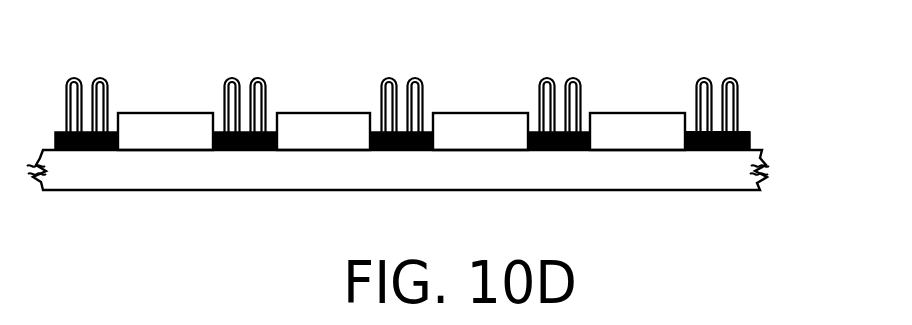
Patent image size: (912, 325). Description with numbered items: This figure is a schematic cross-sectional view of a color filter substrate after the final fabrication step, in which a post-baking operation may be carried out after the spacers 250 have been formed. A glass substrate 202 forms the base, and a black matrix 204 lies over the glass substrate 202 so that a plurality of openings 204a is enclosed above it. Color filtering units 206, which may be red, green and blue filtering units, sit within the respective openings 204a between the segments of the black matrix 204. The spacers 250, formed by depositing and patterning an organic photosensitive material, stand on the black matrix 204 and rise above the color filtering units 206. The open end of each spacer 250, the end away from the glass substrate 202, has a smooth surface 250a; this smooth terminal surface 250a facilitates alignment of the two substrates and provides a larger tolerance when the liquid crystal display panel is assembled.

The glass substrate 202 is at (765, 177).
The black matrix 204 is at (752, 146).
The openings 204a is at (680, 140).
The color filtering units 206 is at (607, 124).
The spacers 250 is at (731, 96).
The smooth surface 250a is at (734, 74).